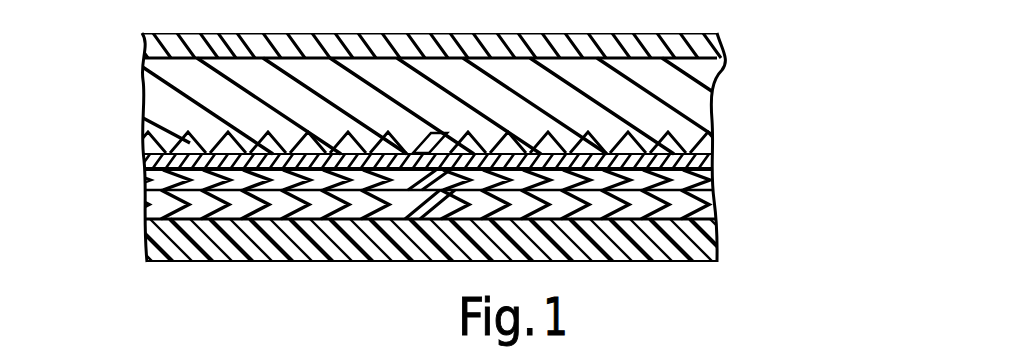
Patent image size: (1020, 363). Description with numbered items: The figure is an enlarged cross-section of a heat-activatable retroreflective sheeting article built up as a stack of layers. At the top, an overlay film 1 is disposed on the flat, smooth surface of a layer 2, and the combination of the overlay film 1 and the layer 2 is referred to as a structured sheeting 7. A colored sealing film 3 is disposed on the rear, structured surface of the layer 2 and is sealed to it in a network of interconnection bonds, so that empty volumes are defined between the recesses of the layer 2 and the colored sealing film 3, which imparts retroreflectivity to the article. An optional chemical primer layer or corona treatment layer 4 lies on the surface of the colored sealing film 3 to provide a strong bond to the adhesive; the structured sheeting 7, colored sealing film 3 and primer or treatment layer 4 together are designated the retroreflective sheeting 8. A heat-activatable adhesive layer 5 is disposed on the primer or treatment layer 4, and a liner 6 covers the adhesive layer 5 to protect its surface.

The overlay film 1 is at (713, 43).
The layer 2 is at (693, 98).
The colored sealing film 3 is at (717, 160).
The primer layer or corona treatment layer 4 is at (153, 185).
The heat-activatable adhesive layer 5 is at (153, 205).
The liner 6 is at (162, 240).
The structured sheeting 7 is at (123, 33).
The retroreflective sheeting 8 is at (802, 32).